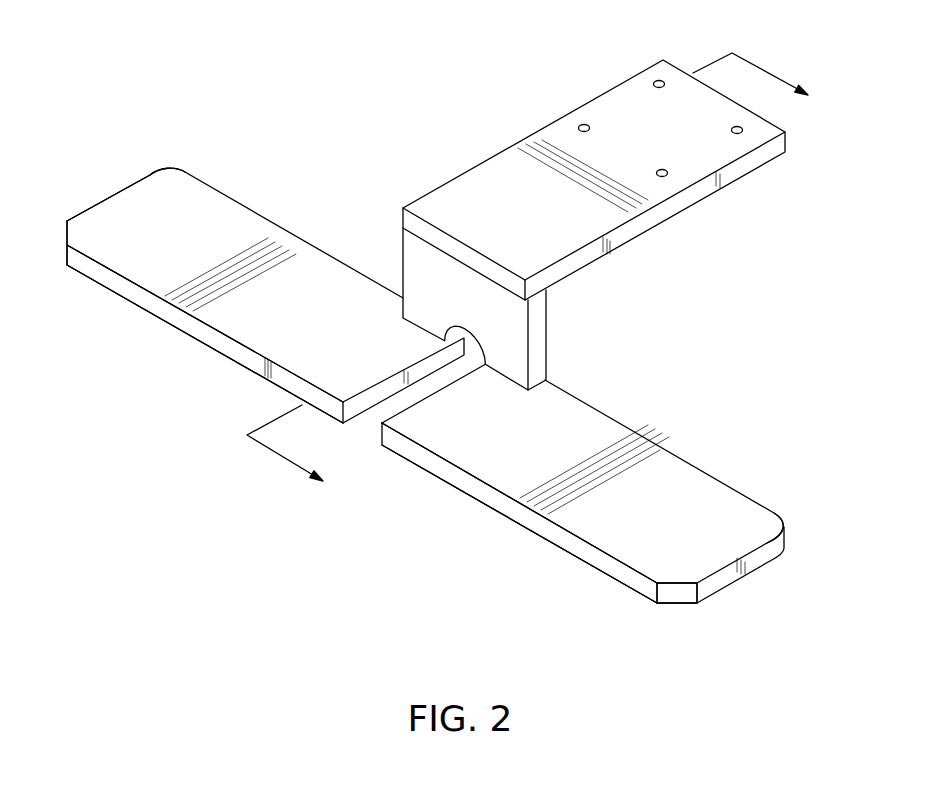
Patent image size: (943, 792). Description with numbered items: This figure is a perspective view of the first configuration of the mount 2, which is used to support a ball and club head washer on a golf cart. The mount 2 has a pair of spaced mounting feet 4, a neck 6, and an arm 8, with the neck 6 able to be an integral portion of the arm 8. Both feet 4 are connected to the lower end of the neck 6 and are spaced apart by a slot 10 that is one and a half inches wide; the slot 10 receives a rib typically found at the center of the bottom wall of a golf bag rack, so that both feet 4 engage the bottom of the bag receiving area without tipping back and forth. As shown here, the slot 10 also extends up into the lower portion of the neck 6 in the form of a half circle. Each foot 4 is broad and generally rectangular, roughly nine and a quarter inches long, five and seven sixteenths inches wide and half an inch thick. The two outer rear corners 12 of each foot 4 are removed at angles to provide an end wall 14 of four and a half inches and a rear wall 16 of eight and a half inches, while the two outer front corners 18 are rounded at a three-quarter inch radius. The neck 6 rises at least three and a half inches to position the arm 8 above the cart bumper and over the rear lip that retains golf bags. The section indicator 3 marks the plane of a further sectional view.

The mount 2 is at (762, 337).
The section line for FIG. 3 is at (536, 276).
The mounting foot 4 is at (328, 282).
The neck 6 is at (538, 318).
The arm 8 is at (648, 226).
The slot 10 is at (377, 412).
The outer rear corners 12 is at (66, 235).
The end wall 14 is at (118, 186).
The rear wall 16 is at (198, 321).
The outer front corners 18 is at (166, 170).